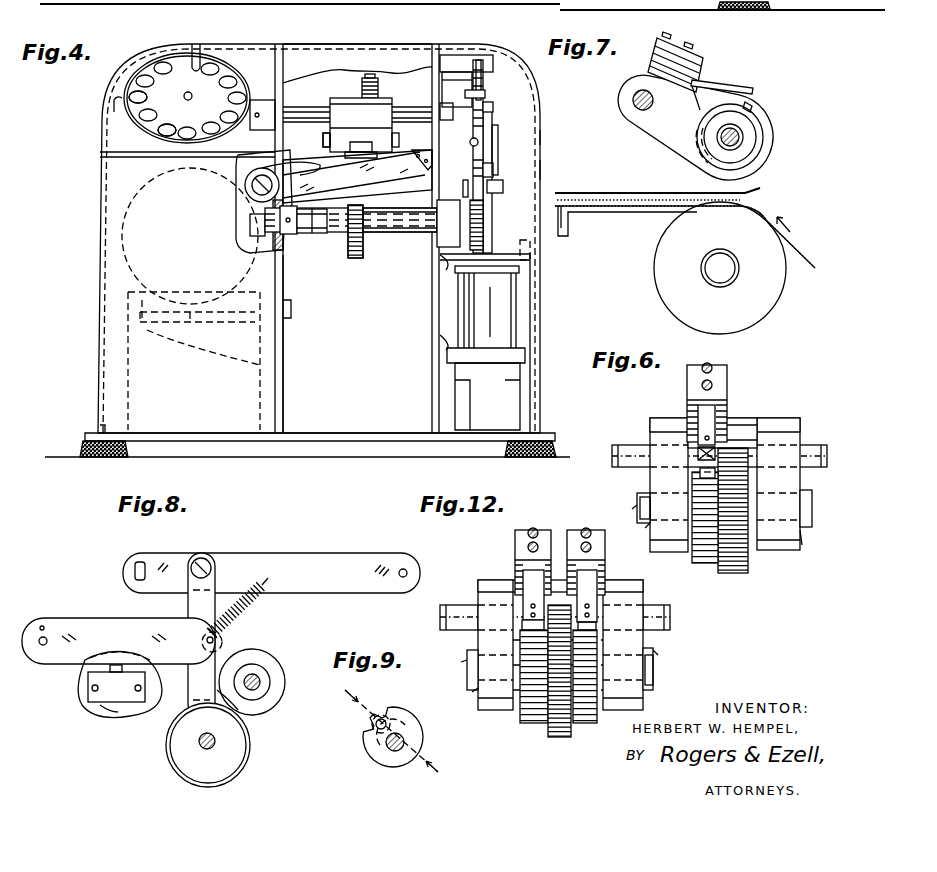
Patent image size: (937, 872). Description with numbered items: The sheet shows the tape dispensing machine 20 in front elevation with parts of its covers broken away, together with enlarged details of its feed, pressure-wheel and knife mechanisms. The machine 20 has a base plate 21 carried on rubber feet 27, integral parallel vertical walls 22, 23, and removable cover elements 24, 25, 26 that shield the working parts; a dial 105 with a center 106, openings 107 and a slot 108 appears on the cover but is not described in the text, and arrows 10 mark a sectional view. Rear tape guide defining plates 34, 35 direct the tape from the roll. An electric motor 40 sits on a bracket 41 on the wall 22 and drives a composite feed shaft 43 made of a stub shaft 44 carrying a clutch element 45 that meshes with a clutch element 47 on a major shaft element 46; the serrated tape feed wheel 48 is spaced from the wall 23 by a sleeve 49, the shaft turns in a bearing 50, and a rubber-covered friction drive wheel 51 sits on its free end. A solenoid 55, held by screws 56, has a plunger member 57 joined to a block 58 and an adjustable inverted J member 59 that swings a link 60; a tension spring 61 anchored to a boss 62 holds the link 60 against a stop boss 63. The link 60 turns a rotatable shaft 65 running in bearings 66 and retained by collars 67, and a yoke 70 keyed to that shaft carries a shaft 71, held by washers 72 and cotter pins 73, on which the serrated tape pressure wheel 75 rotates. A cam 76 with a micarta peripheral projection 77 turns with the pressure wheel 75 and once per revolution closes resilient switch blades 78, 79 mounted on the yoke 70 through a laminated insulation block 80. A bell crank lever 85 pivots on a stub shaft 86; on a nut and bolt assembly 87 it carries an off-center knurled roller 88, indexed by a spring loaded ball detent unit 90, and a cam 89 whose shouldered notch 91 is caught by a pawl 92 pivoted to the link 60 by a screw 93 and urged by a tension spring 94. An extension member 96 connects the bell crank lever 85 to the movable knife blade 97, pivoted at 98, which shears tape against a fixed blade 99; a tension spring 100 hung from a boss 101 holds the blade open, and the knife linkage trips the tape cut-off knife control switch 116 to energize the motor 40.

In FIG. 9, the direction arrows 10 is at (384, 741).
In FIG. 4, the machine 20 is at (77, 309).
In FIG. 4, the base plate 21 is at (178, 425).
In FIG. 4, the vertical wall 22 is at (282, 399).
In FIG. 4, the vertical wall 23 is at (440, 370).
In FIG. 8, the vertical wall 23 is at (105, 712).
In FIG. 4, the cover element 24 is at (112, 108).
In FIG. 4, the cover element 25 is at (385, 50).
In FIG. 4, the cover element 26 is at (542, 140).
In FIG. 4, the rubber feet 27 is at (510, 440).
In FIG. 7, the tape guide defining plate 34 is at (645, 192).
In FIG. 7, the tape guide defining plate 35 is at (620, 212).
In FIG. 4, the electric motor 40 is at (115, 248).
In FIG. 4, the bracket 41 is at (186, 330).
In FIG. 4, the composite feed shaft 43 is at (376, 252).
In FIG. 4, the stub shaft 44 is at (268, 254).
In FIG. 4, the clutch element 45 is at (285, 230).
In FIG. 4, the major shaft element 46 is at (334, 237).
In FIG. 8, the major shaft element 46 is at (200, 742).
In FIG. 4, the clutch element 47 is at (318, 238).
In FIG. 4, the tape feed wheel 48 is at (360, 258).
In FIG. 7, the tape feed wheel 48 is at (746, 318).
In FIG. 4, the sleeve 49 is at (395, 232).
In FIG. 4, the bearing 50 is at (440, 242).
In FIG. 4, the friction drive wheel 51 is at (484, 248).
In FIG. 8, the friction drive wheel 51 is at (245, 770).
In FIG. 4, the solenoid 55 is at (495, 308).
In FIG. 4, the screws 56 is at (440, 337).
In FIG. 4, the plunger member 57 is at (525, 250).
In FIG. 4, the block 58 is at (494, 170).
In FIG. 4, the inverted J member 59 is at (498, 132).
In FIG. 4, the link 60 is at (492, 112).
In FIG. 8, the link 60 is at (318, 555).
In FIG. 4, the tension spring 61 is at (489, 70).
In FIG. 4, the boss 62 is at (466, 55).
In FIG. 4, the stop boss 63 is at (445, 85).
In FIG. 4, the rotatable shaft 65 is at (298, 107).
In FIG. 7, the rotatable shaft 65 is at (634, 95).
In FIG. 6, the rotatable shaft 65 is at (625, 445).
In FIG. 12, the rotatable shaft 65 is at (455, 605).
In FIG. 4, the bearings 66 is at (440, 110).
In FIG. 4, the collars 67 is at (478, 72).
In FIG. 4, the yoke 70 is at (340, 95).
In FIG. 7, the yoke 70 is at (648, 130).
In FIG. 6, the yoke 70 is at (780, 418).
In FIG. 12, the yoke 70 is at (478, 582).
In FIG. 4, the shaft 71 is at (323, 136).
In FIG. 7, the shaft 71 is at (743, 141).
In FIG. 6, the shaft 71 is at (637, 508).
In FIG. 12, the shaft 71 is at (653, 675).
In FIG. 6, the washers 72 is at (640, 495).
In FIG. 12, the washers 72 is at (653, 690).
In FIG. 6, the cotter pins 73 is at (805, 530).
In FIG. 12, the cotter pins 73 is at (654, 662).
In FIG. 4, the tape pressure wheel 75 is at (367, 142).
In FIG. 7, the tape pressure wheel 75 is at (774, 128).
In FIG. 6, the tape pressure wheel 75 is at (738, 575).
In FIG. 12, the tape pressure wheel 75 is at (555, 737).
In FIG. 7, the cam 76 is at (756, 145).
In FIG. 6, the cam 76 is at (708, 565).
In FIG. 12, the cam 76 is at (598, 724).
In FIG. 7, the peripheral projection 77 is at (760, 100).
In FIG. 6, the peripheral projection 77 is at (705, 480).
In FIG. 12, the peripheral projection 77 is at (578, 712).
In FIG. 7, the switch blade 78 is at (730, 85).
In FIG. 6, the switch blade 78 is at (712, 412).
In FIG. 12, the switch blade 78 is at (595, 580).
In FIG. 7, the switch blade 79 is at (690, 95).
In FIG. 6, the switch blade 79 is at (700, 452).
In FIG. 12, the switch blade 79 is at (643, 632).
In FIG. 4, the laminated insulation block 80 is at (358, 74).
In FIG. 7, the laminated insulation block 80 is at (703, 62).
In FIG. 6, the laminated insulation block 80 is at (728, 377).
In FIG. 12, the laminated insulation block 80 is at (572, 535).
In FIG. 4, the bell crank lever 85 is at (504, 186).
In FIG. 8, the bell crank lever 85 is at (96, 628).
In FIG. 9, the bell crank lever 85 is at (366, 733).
In FIG. 4, the stub shaft 86 is at (463, 188).
In FIG. 8, the stub shaft 86 is at (222, 640).
In FIG. 8, the nut and bolt assembly 87 is at (258, 677).
In FIG. 8, the roller 88 is at (285, 670).
In FIG. 9, the roller 88 is at (392, 752).
In FIG. 8, the cam 89 is at (272, 684).
In FIG. 9, the spring loaded ball detent unit 90 is at (392, 715).
In FIG. 8, the shouldered notch 91 is at (230, 712).
In FIG. 4, the pawl 92 is at (541, 158).
In FIG. 8, the pawl 92 is at (196, 600).
In FIG. 4, the screw 93 is at (493, 108).
In FIG. 8, the screw 93 is at (205, 558).
In FIG. 8, the tension spring 94 is at (255, 609).
In FIG. 4, the extension member 96 is at (420, 178).
In FIG. 4, the knife blade 97 is at (405, 160).
In FIG. 4, the pivot 98 is at (250, 203).
In FIG. 4, the fixed blade 99 is at (362, 184).
In FIG. 7, the fixed blade 99 is at (572, 236).
In FIG. 4, the tension spring 100 is at (480, 142).
In FIG. 4, the boss 101 is at (487, 96).
In FIG. 4, the dial 105 is at (160, 63).
In FIG. 4, the dial center 106 is at (185, 95).
In FIG. 4, the dial holes 107 is at (165, 130).
In FIG. 4, the dial slot 108 is at (198, 44).
In FIG. 8, the tape cut-off knife control switch 116 is at (88, 700).